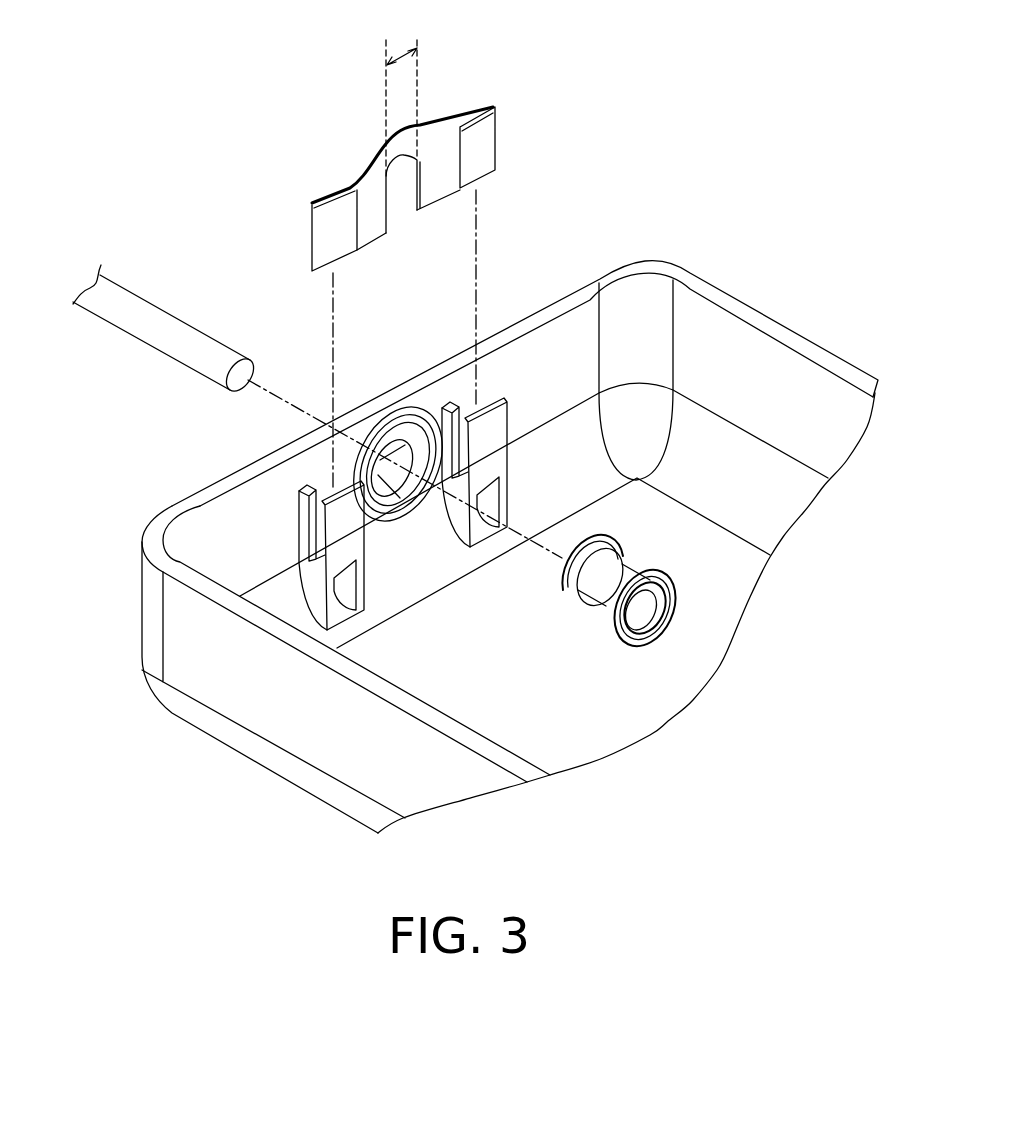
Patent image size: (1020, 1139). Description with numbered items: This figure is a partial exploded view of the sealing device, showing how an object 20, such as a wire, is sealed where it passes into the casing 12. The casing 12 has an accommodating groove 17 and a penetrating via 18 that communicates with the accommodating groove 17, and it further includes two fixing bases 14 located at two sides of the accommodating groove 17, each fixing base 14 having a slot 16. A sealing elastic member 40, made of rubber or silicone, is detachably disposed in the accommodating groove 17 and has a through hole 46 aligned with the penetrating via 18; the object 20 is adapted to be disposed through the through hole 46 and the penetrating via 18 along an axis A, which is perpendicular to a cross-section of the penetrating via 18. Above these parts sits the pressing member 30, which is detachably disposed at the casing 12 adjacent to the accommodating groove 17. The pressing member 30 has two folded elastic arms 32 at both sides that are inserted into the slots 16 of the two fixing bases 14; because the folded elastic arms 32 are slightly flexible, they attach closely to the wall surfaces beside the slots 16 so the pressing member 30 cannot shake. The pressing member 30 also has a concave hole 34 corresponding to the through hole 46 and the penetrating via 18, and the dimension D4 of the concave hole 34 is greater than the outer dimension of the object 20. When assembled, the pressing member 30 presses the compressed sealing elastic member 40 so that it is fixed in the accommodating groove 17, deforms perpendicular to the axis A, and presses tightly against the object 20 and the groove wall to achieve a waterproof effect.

The casing 12 is at (190, 682).
The fixing base 14 is at (315, 594).
The slot 16 is at (293, 508).
The accommodating groove 17 is at (392, 445).
The penetrating via 18 is at (350, 483).
The object 20 is at (150, 313).
The pressing member 30 is at (408, 251).
The folded elastic arm 32 is at (333, 237).
The concave hole 34 is at (402, 213).
The sealing elastic member 40 is at (702, 496).
The through hole 46 is at (648, 632).
The dimension of the concave hole D4 is at (437, 132).
The axis A is at (558, 557).